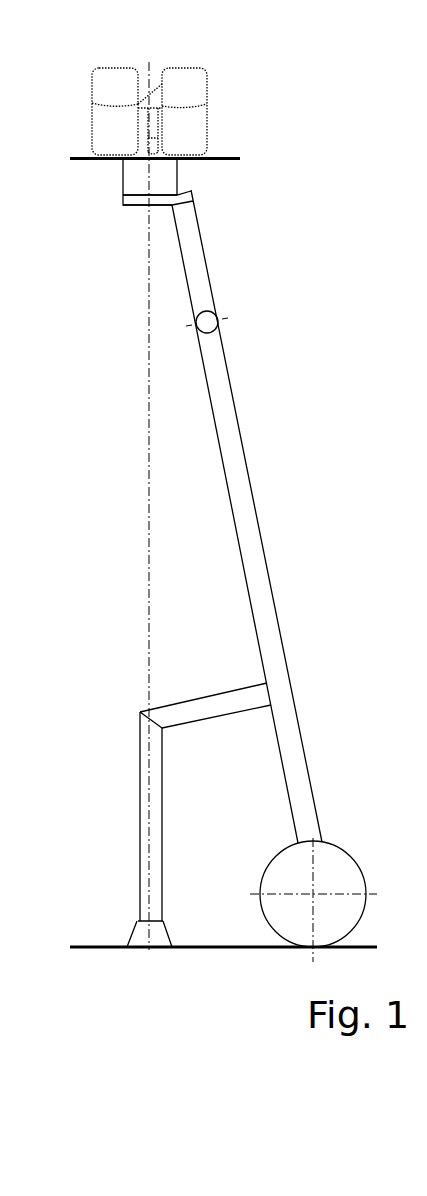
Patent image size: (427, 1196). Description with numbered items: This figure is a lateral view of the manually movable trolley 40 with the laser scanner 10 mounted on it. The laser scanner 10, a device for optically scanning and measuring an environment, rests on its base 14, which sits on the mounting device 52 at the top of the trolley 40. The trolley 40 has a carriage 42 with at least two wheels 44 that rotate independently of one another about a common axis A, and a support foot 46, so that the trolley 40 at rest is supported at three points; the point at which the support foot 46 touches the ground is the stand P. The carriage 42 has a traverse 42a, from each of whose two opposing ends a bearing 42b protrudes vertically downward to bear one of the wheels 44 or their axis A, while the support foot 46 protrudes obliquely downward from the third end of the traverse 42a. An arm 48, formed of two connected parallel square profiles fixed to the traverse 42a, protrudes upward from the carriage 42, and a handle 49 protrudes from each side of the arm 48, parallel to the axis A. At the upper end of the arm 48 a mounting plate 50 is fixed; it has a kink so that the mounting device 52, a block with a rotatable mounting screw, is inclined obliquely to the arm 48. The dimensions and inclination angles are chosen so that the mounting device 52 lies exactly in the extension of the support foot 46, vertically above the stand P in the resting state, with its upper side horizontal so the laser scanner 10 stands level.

The laser scanner 10 is at (208, 70).
The base 14 is at (163, 157).
The mounting device 52 is at (163, 173).
The mounting plate 50 is at (135, 200).
The arm 48 is at (193, 268).
The handle 49 is at (203, 322).
The trolley 40 is at (252, 576).
The carriage 42 is at (250, 763).
The traverse 42a is at (205, 703).
The bearing 42b is at (290, 757).
The support foot 46 is at (153, 830).
The wheel 44 is at (342, 873).
The stand P is at (148, 950).
The axis A is at (313, 895).